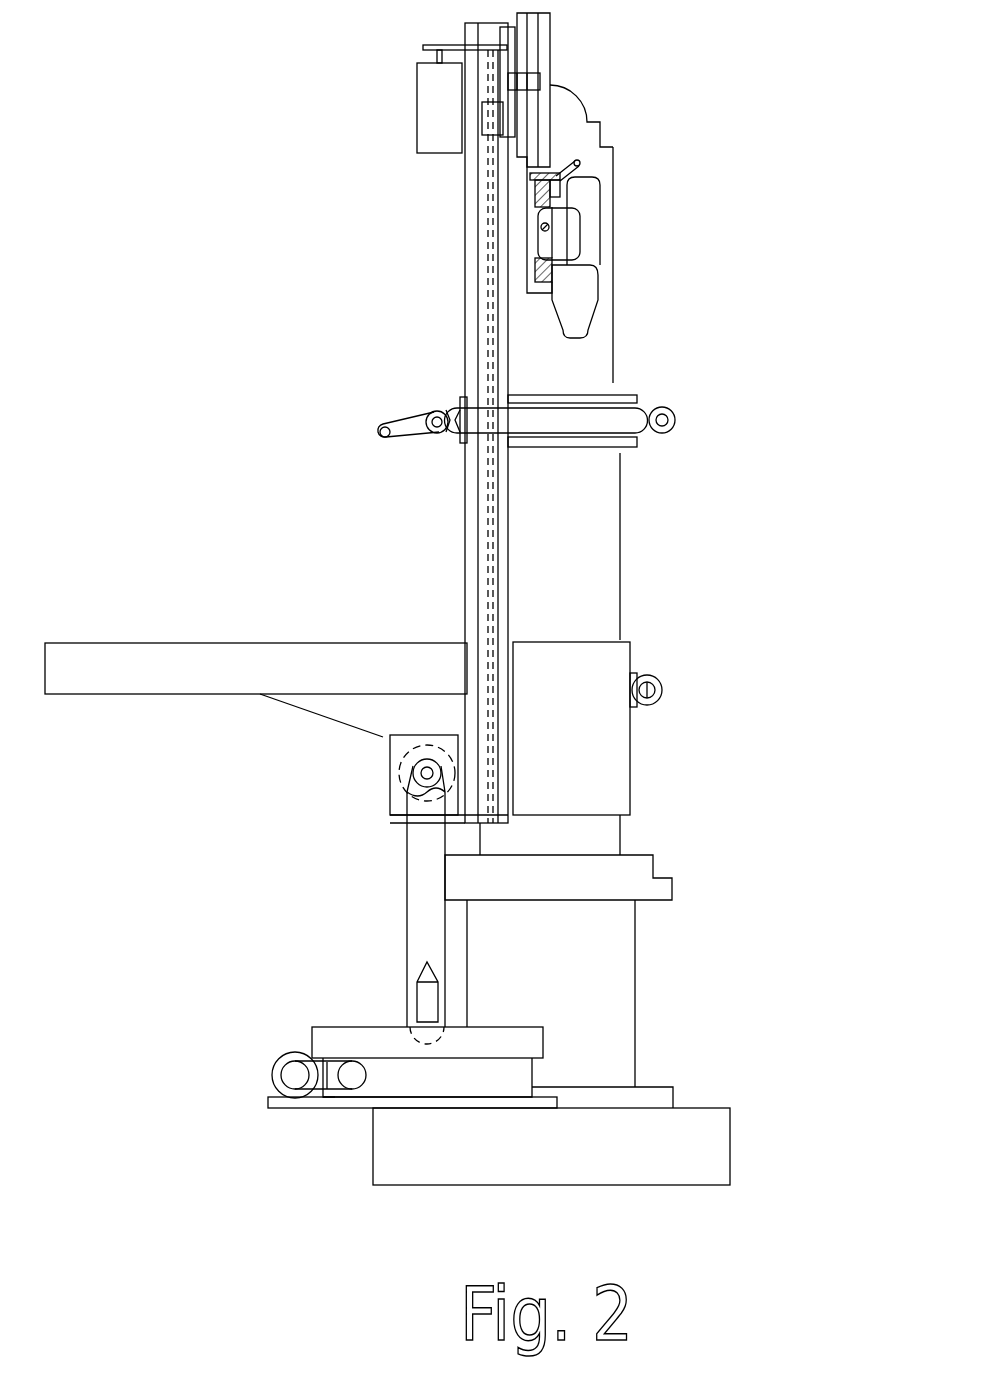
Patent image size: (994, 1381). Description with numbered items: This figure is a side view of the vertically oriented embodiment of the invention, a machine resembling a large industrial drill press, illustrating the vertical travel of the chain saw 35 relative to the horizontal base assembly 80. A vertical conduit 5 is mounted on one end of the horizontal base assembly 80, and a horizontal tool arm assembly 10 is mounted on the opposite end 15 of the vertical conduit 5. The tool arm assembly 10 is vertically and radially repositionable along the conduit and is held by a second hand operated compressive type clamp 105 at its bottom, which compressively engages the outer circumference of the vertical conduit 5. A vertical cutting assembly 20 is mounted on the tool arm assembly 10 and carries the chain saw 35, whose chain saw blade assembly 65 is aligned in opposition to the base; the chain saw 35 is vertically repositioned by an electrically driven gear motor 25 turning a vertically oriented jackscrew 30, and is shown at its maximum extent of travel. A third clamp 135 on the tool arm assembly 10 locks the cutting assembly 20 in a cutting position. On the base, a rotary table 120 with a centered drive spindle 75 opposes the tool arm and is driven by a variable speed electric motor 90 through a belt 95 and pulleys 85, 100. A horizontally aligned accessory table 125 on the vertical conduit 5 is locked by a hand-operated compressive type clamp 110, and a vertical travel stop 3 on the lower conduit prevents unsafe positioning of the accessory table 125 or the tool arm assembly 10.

The vertical travel stop 3 is at (683, 870).
The vertical conduit 5 is at (618, 540).
The horizontal tool arm assembly 10 is at (602, 272).
The opposite end 15 is at (582, 90).
The vertical cutting assembly 20 is at (465, 183).
The electrically driven gear motor 25 is at (418, 108).
The jackscrew 30 is at (485, 238).
The chain saw 35 is at (398, 768).
The chain saw blade assembly 65 is at (405, 920).
The drive spindle 75 is at (435, 963).
The horizontal base assembly 80 is at (735, 1140).
The pulley 85 is at (280, 1057).
The variable speed electric motor 90 is at (290, 1100).
The belt 95 is at (333, 1093).
The pulley 100 is at (350, 1058).
The second hand operated compressive type clamp 105 is at (432, 410).
The hand-operated compressive type clamp 110 is at (668, 700).
The rotary table 120 is at (555, 1030).
The accessory table 125 is at (245, 640).
The third clamp 135 is at (585, 168).